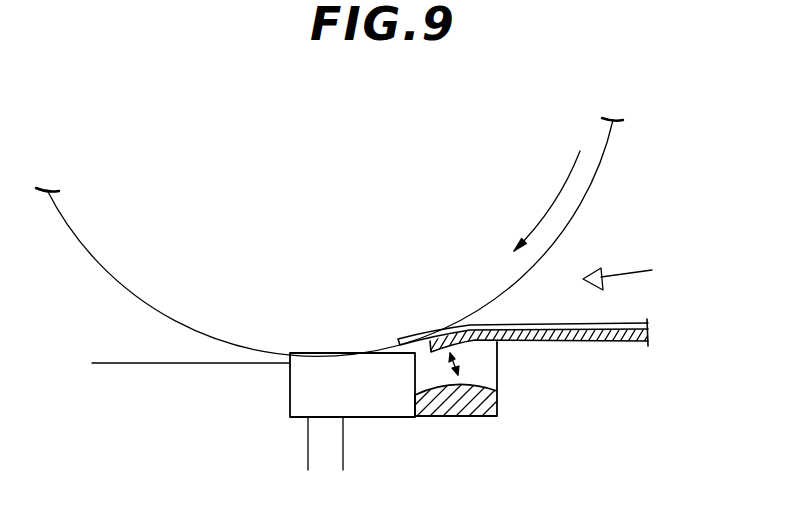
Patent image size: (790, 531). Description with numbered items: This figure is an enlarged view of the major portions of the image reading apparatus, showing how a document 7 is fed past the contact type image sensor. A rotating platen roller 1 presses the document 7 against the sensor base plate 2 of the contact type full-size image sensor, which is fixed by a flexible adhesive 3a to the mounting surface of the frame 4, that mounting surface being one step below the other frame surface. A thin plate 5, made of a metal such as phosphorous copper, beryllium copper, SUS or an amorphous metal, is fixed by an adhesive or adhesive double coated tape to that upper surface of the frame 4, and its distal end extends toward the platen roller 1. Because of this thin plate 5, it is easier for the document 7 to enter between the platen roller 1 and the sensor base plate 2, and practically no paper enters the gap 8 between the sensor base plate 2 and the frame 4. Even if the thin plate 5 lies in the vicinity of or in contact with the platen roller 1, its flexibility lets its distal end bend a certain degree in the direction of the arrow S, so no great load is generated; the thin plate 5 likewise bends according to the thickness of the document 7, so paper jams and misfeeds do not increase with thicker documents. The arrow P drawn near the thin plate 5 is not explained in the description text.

The platen roller 1 is at (587, 138).
The sensor base plate 2 is at (295, 398).
The adhesive 3a is at (455, 417).
The frame 4 is at (152, 373).
The thin plate 5 is at (600, 342).
The document 7 is at (630, 323).
The gap 8 is at (487, 371).
The bending direction arrow S is at (452, 366).
The pressing direction P is at (632, 272).